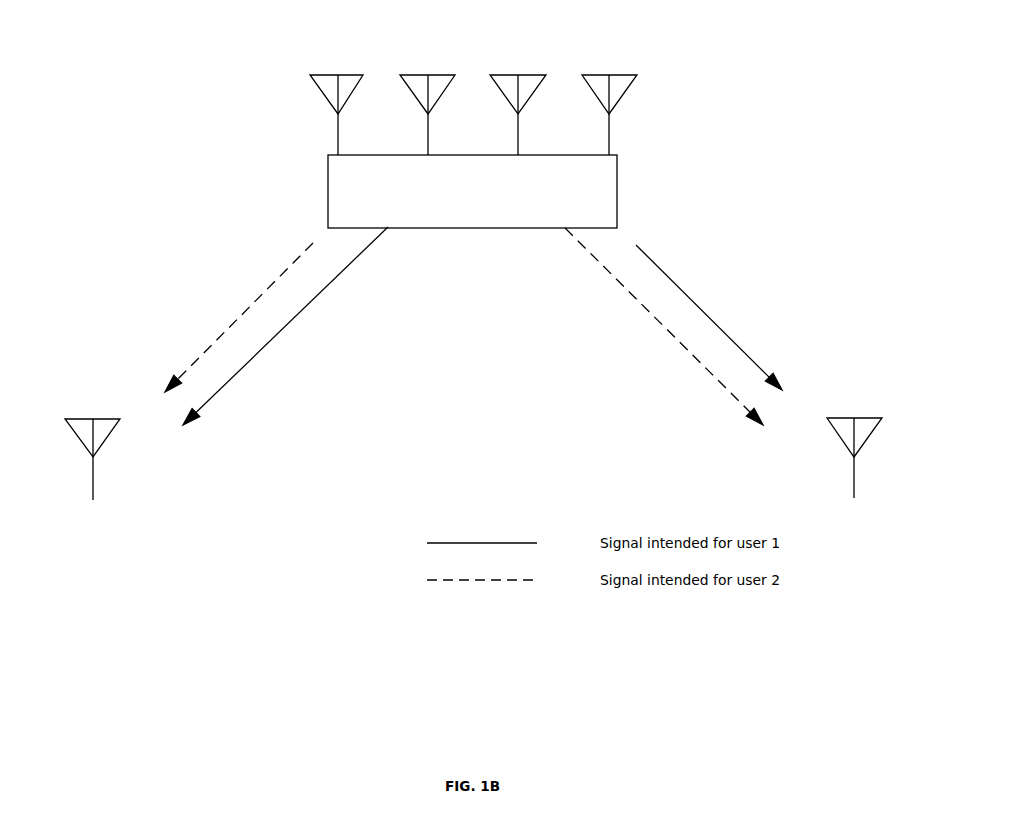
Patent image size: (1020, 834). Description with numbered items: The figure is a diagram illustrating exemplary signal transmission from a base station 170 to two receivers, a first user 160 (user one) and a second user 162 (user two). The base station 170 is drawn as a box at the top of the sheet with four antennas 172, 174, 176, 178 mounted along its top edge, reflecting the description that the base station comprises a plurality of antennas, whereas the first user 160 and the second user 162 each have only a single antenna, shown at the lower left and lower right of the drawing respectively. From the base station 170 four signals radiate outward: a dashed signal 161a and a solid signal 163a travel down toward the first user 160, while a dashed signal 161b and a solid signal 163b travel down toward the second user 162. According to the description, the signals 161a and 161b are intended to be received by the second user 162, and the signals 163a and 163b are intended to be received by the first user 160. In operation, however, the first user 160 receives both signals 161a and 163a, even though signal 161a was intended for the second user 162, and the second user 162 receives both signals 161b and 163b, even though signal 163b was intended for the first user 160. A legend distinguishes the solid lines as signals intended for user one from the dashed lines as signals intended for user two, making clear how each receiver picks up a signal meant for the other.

The first user 160 is at (93, 419).
The second user 162 is at (854, 418).
The base station 170 is at (328, 200).
The base station antenna 172 is at (338, 75).
The base station antenna 174 is at (428, 75).
The base station antenna 176 is at (518, 75).
The base station antenna 178 is at (609, 75).
The signal 161a is at (237, 317).
The signal 161b is at (662, 325).
The signal 163a is at (276, 335).
The signal 163b is at (688, 297).